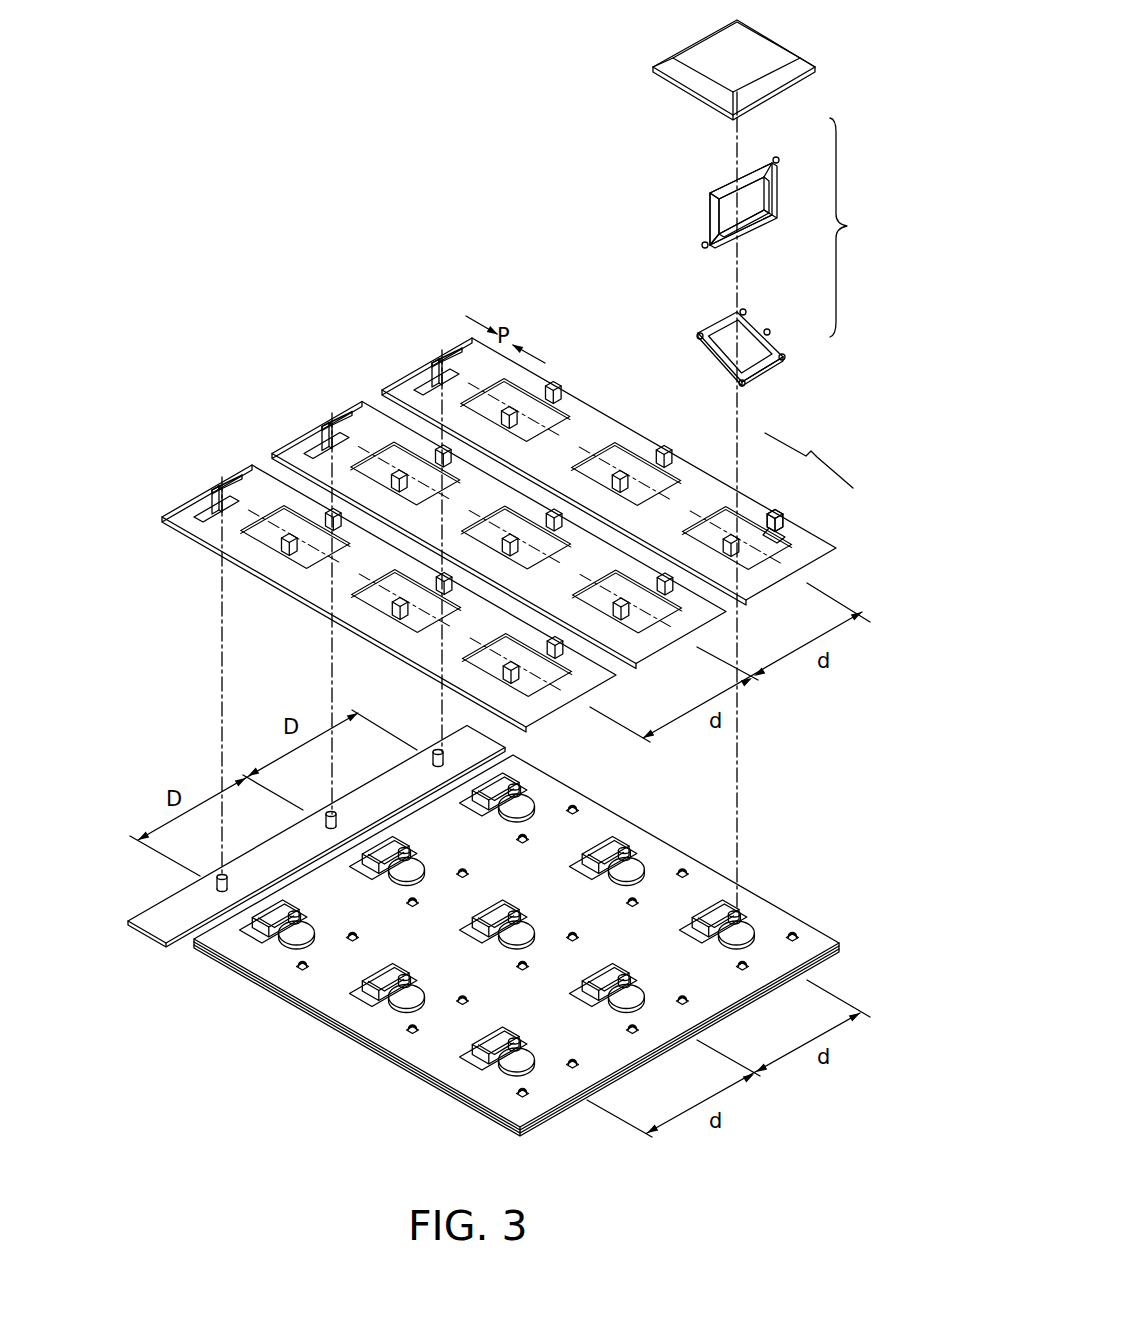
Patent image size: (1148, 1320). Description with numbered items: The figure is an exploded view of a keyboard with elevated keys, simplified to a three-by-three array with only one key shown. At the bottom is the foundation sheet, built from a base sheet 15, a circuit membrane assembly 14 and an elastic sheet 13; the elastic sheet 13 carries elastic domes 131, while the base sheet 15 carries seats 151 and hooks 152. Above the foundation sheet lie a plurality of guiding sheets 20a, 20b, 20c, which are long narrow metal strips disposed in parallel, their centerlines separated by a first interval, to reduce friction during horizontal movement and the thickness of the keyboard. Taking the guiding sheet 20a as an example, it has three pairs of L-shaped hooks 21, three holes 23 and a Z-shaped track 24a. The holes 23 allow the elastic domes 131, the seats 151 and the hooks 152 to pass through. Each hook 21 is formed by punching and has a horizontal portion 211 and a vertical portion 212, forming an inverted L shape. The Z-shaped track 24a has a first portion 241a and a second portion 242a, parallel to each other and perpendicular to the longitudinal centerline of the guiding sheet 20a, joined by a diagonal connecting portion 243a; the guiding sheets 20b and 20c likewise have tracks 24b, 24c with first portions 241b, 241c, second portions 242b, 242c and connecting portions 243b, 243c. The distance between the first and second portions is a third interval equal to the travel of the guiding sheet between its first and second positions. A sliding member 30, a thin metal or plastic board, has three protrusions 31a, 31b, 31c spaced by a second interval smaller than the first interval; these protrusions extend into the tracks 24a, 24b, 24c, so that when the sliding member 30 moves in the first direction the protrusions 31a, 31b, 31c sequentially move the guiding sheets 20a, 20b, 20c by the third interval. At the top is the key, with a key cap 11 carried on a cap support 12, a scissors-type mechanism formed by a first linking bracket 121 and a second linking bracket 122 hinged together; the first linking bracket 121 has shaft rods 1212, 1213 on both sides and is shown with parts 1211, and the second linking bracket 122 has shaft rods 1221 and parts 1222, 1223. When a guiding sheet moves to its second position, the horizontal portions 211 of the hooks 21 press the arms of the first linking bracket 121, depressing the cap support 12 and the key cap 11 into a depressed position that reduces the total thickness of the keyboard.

The key cap 11 is at (707, 50).
The cap support 12 is at (854, 227).
The first linking bracket 121 is at (716, 330).
The side bar of first frame 1211 is at (708, 222).
The shaft rod 1212 is at (705, 245).
The shaft rod 1213 is at (710, 200).
The second linking bracket 122 is at (720, 350).
The shaft rods 1221 is at (706, 357).
The side bar of second frame 1222 is at (780, 366).
The hinge portion of second frame 1223 is at (710, 324).
The elastic sheet 13 is at (252, 974).
The elastic dome 131 is at (750, 926).
The circuit membrane assembly 14 is at (275, 990).
The base sheet 15 is at (305, 1008).
The seat 151 is at (796, 934).
The hook 152 is at (538, 924).
The guiding sheet 20a is at (587, 450).
The guiding sheet 20b is at (479, 509).
The guiding sheet 20c is at (369, 569).
The hook 21 is at (809, 457).
The horizontal portion 211 is at (770, 514).
The vertical portion 212 is at (780, 540).
The hole 23 is at (724, 520).
The Z-shaped track 24a is at (414, 327).
The Z-shaped track 24b is at (303, 387).
The Z-shaped track 24c is at (192, 450).
The first portion 241a is at (450, 356).
The first portion 241b is at (340, 419).
The first portion 241c is at (230, 483).
The second portion 242a is at (434, 373).
The second portion 242b is at (324, 436).
The second portion 242c is at (214, 500).
The connecting portion 243a is at (415, 389).
The connecting portion 243b is at (305, 452).
The connecting portion 243c is at (195, 516).
The sliding member 30 is at (308, 845).
The protrusion 31a is at (444, 760).
The protrusion 31b is at (337, 822).
The protrusion 31c is at (228, 884).